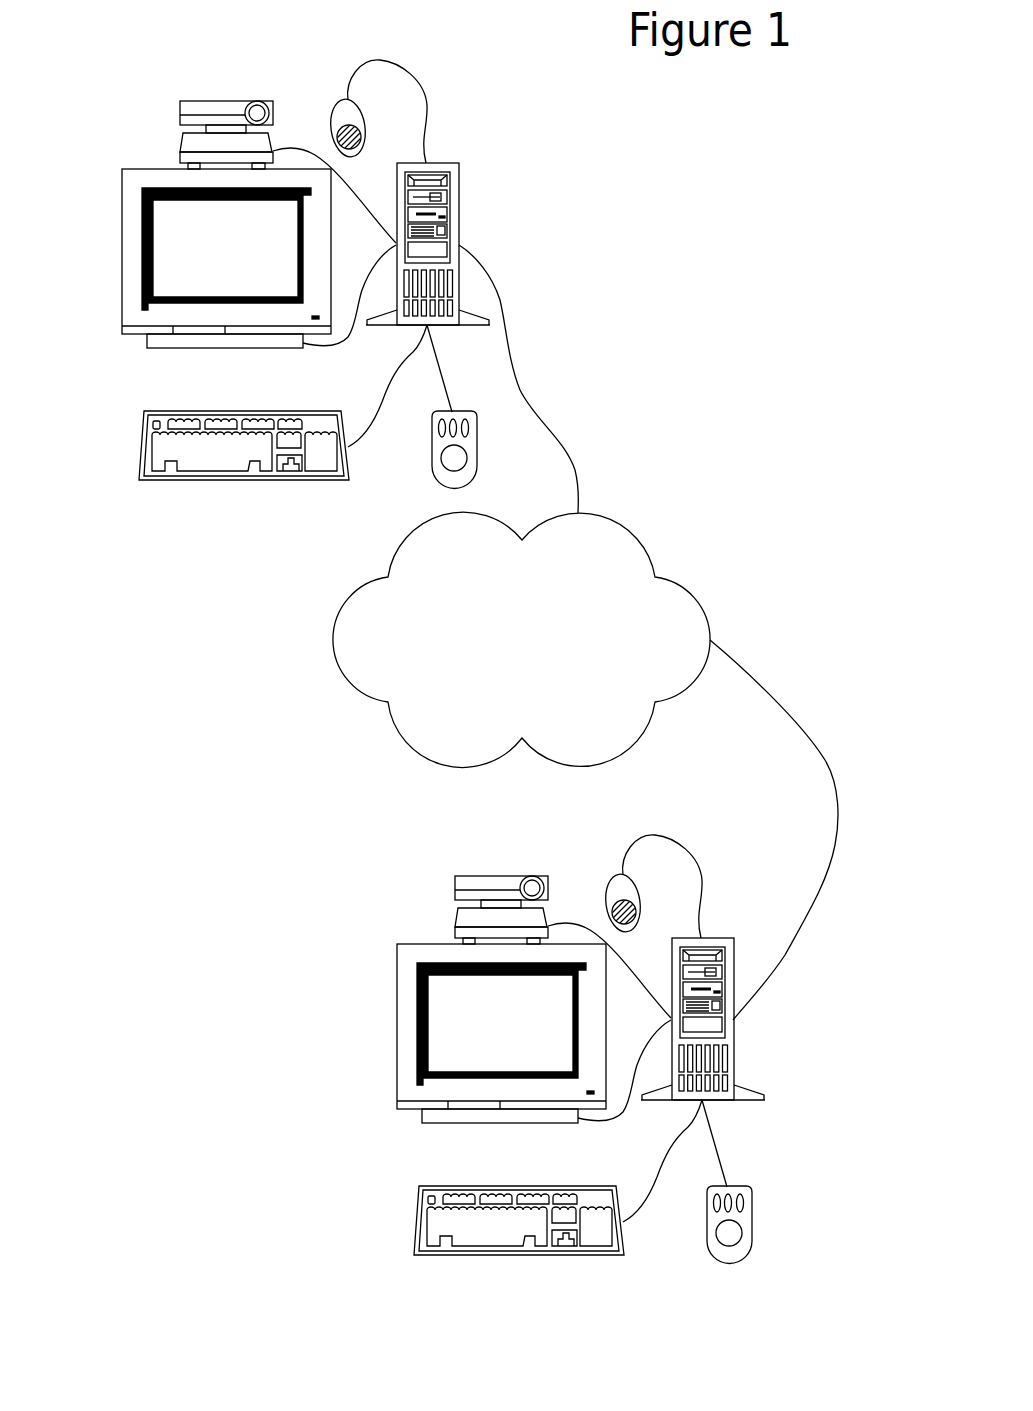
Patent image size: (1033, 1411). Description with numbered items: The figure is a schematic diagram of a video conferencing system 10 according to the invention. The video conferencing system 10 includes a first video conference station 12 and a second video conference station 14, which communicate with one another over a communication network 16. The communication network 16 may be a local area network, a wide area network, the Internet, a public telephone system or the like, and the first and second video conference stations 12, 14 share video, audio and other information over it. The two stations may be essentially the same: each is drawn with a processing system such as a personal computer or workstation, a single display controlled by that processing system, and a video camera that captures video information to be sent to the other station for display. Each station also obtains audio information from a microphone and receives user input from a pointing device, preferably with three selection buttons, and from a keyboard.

The video conferencing system 10 is at (747, 238).
The first video conference station 12 is at (507, 168).
The second video conference station 14 is at (503, 1063).
The communication network 16 is at (640, 548).